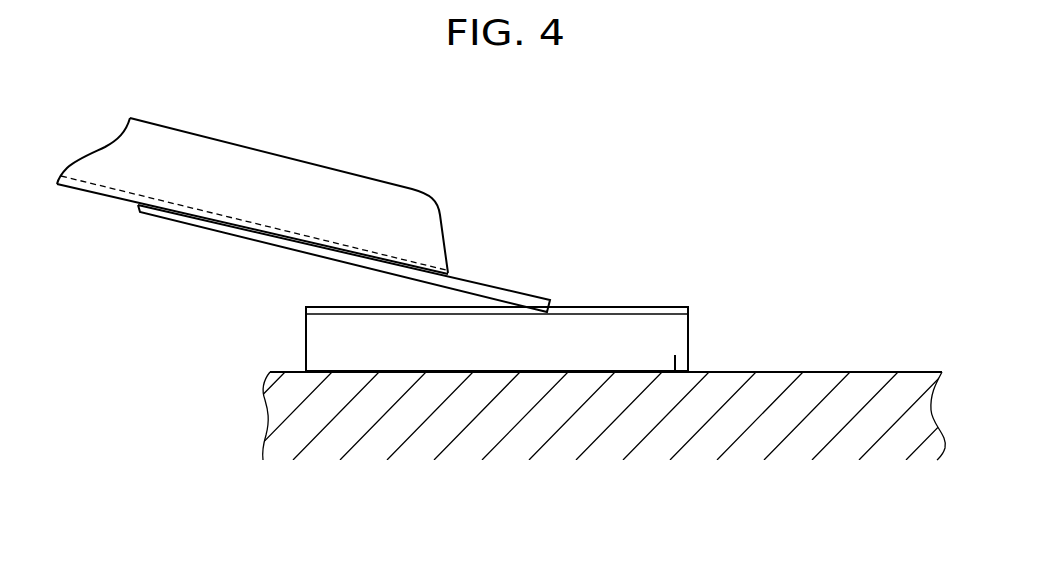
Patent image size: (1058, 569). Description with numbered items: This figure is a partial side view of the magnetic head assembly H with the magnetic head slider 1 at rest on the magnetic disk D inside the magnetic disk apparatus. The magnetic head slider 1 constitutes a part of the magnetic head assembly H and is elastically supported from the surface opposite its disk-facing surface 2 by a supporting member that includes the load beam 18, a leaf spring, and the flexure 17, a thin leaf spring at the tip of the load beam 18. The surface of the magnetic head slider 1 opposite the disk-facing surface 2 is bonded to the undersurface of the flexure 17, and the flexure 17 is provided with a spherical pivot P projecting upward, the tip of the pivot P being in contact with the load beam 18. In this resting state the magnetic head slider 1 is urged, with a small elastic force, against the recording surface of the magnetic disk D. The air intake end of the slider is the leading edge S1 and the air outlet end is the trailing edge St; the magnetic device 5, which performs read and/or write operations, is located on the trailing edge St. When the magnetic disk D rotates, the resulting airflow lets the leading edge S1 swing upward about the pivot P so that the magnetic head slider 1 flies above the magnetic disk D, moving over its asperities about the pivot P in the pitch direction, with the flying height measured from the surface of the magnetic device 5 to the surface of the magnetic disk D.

The load beam 18 is at (310, 185).
The magnetic head assembly H is at (440, 198).
The pivot P is at (500, 287).
The magnetic head slider 1 is at (650, 323).
The flexure 17 is at (630, 307).
The magnetic device 5 is at (688, 308).
The trailing edge St is at (690, 352).
The leading edge S1 is at (306, 337).
The disk-facing surface 2 is at (587, 373).
The magnetic disk D is at (672, 440).